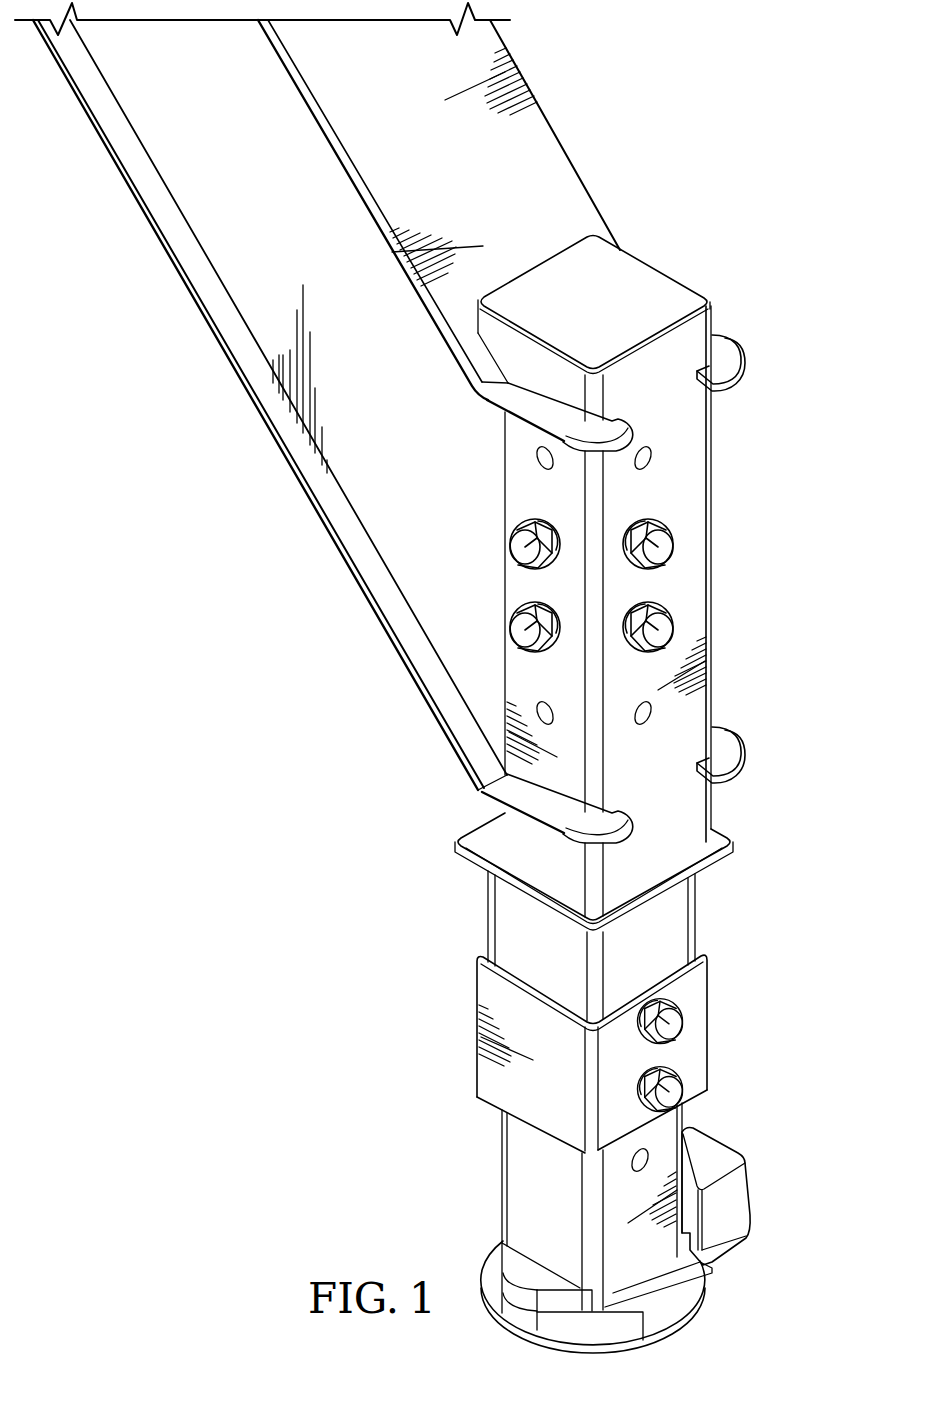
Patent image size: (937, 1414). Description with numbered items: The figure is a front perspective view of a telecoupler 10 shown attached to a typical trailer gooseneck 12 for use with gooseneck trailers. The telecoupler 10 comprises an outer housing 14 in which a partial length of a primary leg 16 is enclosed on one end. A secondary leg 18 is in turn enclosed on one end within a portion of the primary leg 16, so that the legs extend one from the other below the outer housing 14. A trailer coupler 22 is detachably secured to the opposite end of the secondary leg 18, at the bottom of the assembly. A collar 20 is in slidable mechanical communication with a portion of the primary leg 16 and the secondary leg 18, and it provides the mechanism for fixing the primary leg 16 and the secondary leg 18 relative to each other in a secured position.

The telecoupler 10 is at (431, 678).
The trailer gooseneck 12 is at (549, 131).
The outer housing 14 is at (702, 477).
The primary leg 16 is at (683, 914).
The secondary leg 18 is at (513, 1180).
The collar 20 is at (697, 1038).
The trailer coupler 22 is at (682, 1310).